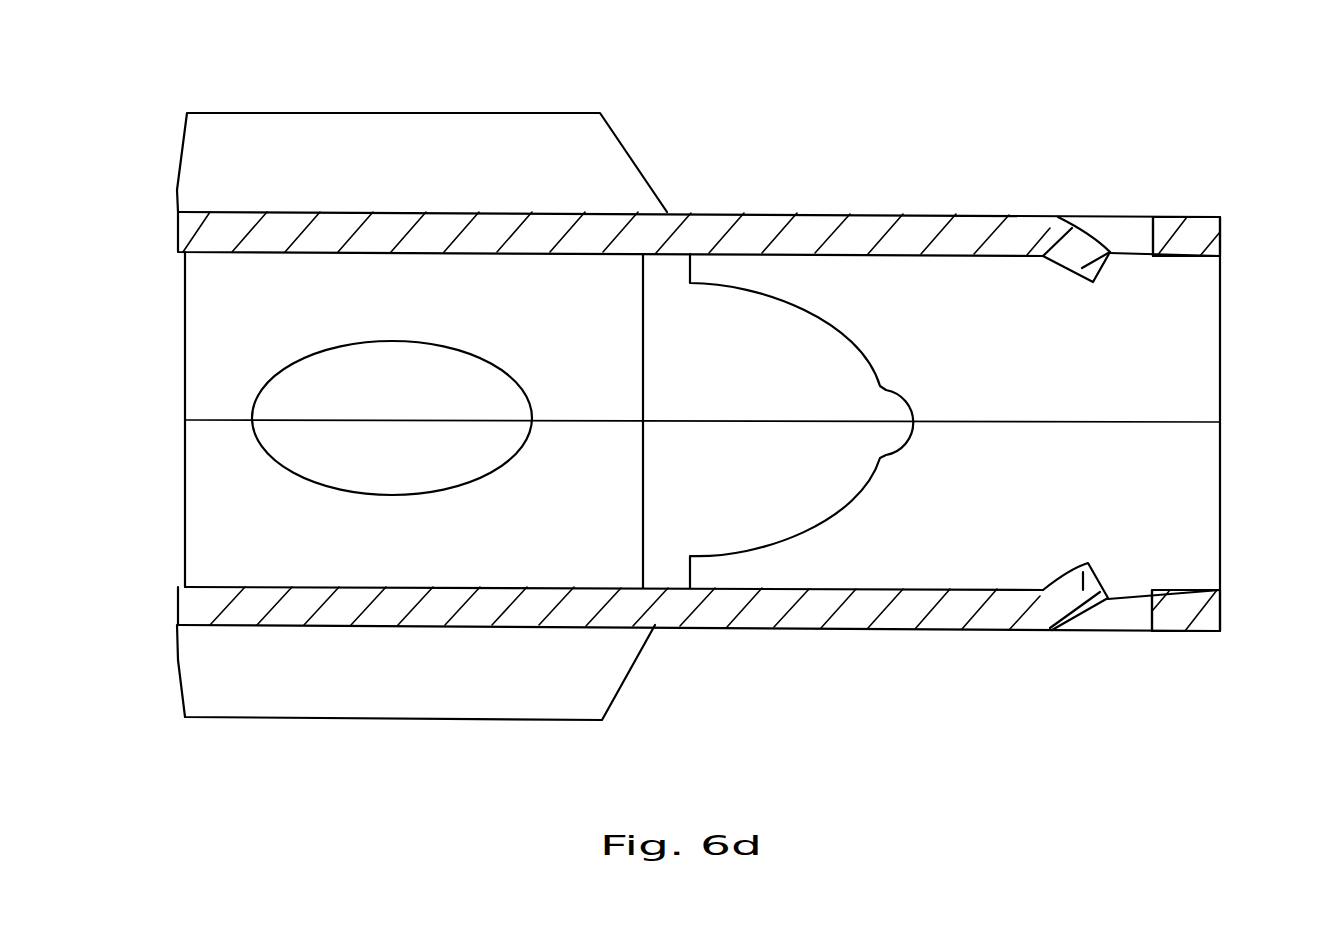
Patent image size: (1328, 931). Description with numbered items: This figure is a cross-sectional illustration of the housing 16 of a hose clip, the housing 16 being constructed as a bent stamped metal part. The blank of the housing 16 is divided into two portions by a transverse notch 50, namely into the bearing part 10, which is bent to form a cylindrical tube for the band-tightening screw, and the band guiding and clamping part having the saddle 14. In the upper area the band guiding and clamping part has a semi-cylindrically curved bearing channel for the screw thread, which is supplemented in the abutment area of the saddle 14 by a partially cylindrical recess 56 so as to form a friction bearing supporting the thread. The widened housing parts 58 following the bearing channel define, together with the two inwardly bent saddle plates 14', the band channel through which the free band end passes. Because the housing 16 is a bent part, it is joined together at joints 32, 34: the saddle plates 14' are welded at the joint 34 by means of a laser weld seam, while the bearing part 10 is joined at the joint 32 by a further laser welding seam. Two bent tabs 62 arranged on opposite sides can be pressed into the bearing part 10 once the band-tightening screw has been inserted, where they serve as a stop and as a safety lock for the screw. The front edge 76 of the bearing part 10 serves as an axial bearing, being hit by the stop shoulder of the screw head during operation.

The bearing part 10 is at (1145, 512).
The saddle 14 is at (680, 421).
The saddle plates 14' is at (678, 434).
The housing 16 is at (230, 522).
The joint 32 is at (972, 423).
The joint 34 is at (573, 422).
The transverse notch 50 is at (803, 520).
The partially cylindrical recess 56 is at (444, 397).
The widened housing parts 58 is at (483, 165).
The bent tabs 62 is at (1083, 565).
The front edge 76 is at (1213, 238).